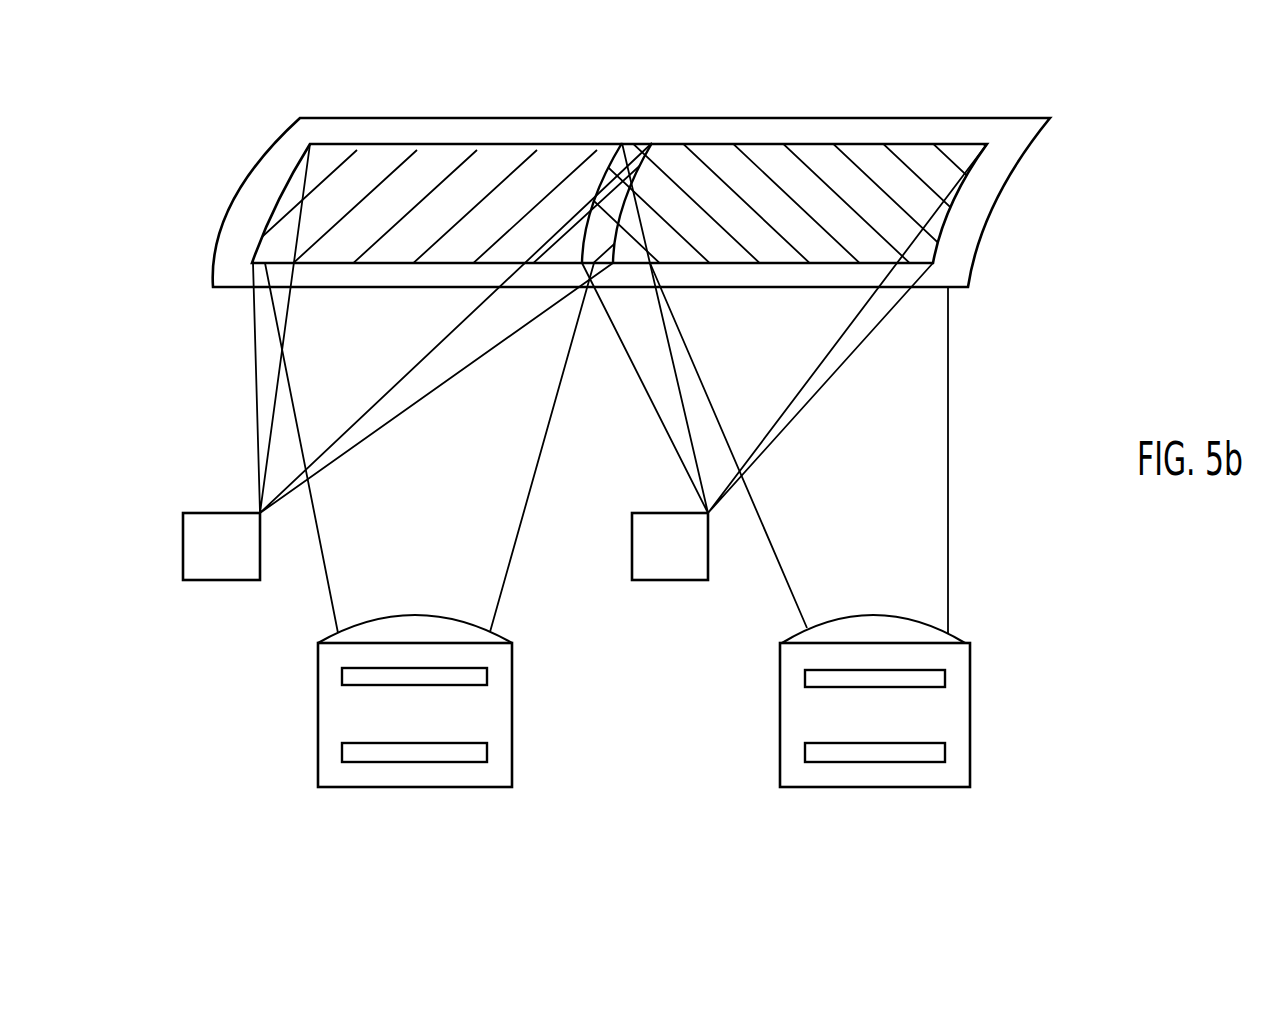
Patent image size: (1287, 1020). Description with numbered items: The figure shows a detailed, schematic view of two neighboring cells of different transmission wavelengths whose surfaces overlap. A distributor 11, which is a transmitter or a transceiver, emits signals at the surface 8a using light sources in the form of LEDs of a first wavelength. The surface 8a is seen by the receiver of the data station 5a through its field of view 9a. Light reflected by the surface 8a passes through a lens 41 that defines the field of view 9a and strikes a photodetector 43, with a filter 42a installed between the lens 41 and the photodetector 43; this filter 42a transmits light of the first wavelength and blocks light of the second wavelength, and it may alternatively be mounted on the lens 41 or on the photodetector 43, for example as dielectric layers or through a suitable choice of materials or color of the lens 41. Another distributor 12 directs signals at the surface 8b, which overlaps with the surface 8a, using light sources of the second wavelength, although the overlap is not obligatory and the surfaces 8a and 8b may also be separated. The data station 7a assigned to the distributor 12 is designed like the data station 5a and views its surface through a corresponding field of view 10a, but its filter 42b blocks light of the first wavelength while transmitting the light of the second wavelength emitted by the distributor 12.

The data station 5a is at (347, 710).
The data station 7a is at (828, 710).
The surface 8a is at (478, 165).
The surface 8b is at (793, 166).
The field of view 9a is at (434, 521).
The light path 10a is at (874, 521).
The distributor 11 is at (218, 556).
The distributor 12 is at (677, 572).
The lens 41 is at (405, 622).
The filter 42a is at (470, 675).
The filter 42b is at (942, 677).
The photodetector 43 is at (475, 750).